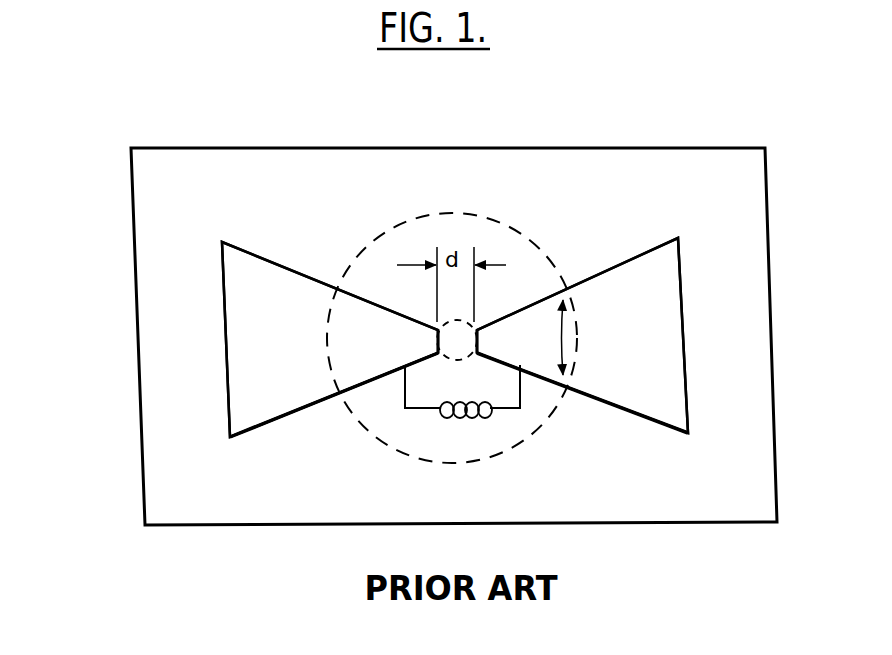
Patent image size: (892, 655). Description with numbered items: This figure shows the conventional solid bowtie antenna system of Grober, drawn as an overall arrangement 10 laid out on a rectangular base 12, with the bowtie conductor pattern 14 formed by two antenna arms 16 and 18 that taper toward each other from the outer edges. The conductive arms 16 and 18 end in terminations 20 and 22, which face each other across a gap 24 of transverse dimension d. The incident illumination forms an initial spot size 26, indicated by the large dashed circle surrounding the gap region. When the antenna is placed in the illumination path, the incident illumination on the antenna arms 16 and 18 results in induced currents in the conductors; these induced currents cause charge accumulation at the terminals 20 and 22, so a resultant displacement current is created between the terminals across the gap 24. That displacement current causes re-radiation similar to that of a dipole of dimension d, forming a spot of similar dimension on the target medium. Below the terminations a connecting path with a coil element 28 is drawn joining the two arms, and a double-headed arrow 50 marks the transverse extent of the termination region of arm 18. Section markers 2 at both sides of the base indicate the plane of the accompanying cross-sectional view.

The section line 2- 2 is at (86, 382).
The prior art spark gap device 10 is at (137, 428).
The substrate 12 is at (725, 508).
The electrode pattern 14 is at (311, 247).
The antenna arm 16 is at (242, 385).
The antenna arm 18 is at (623, 387).
The termination 20 is at (431, 335).
The termination 22 is at (485, 341).
The gap 24 is at (466, 316).
The initial spot size 26 is at (510, 218).
The inductive load 28 is at (470, 419).
The electrode tip width 50 is at (567, 323).